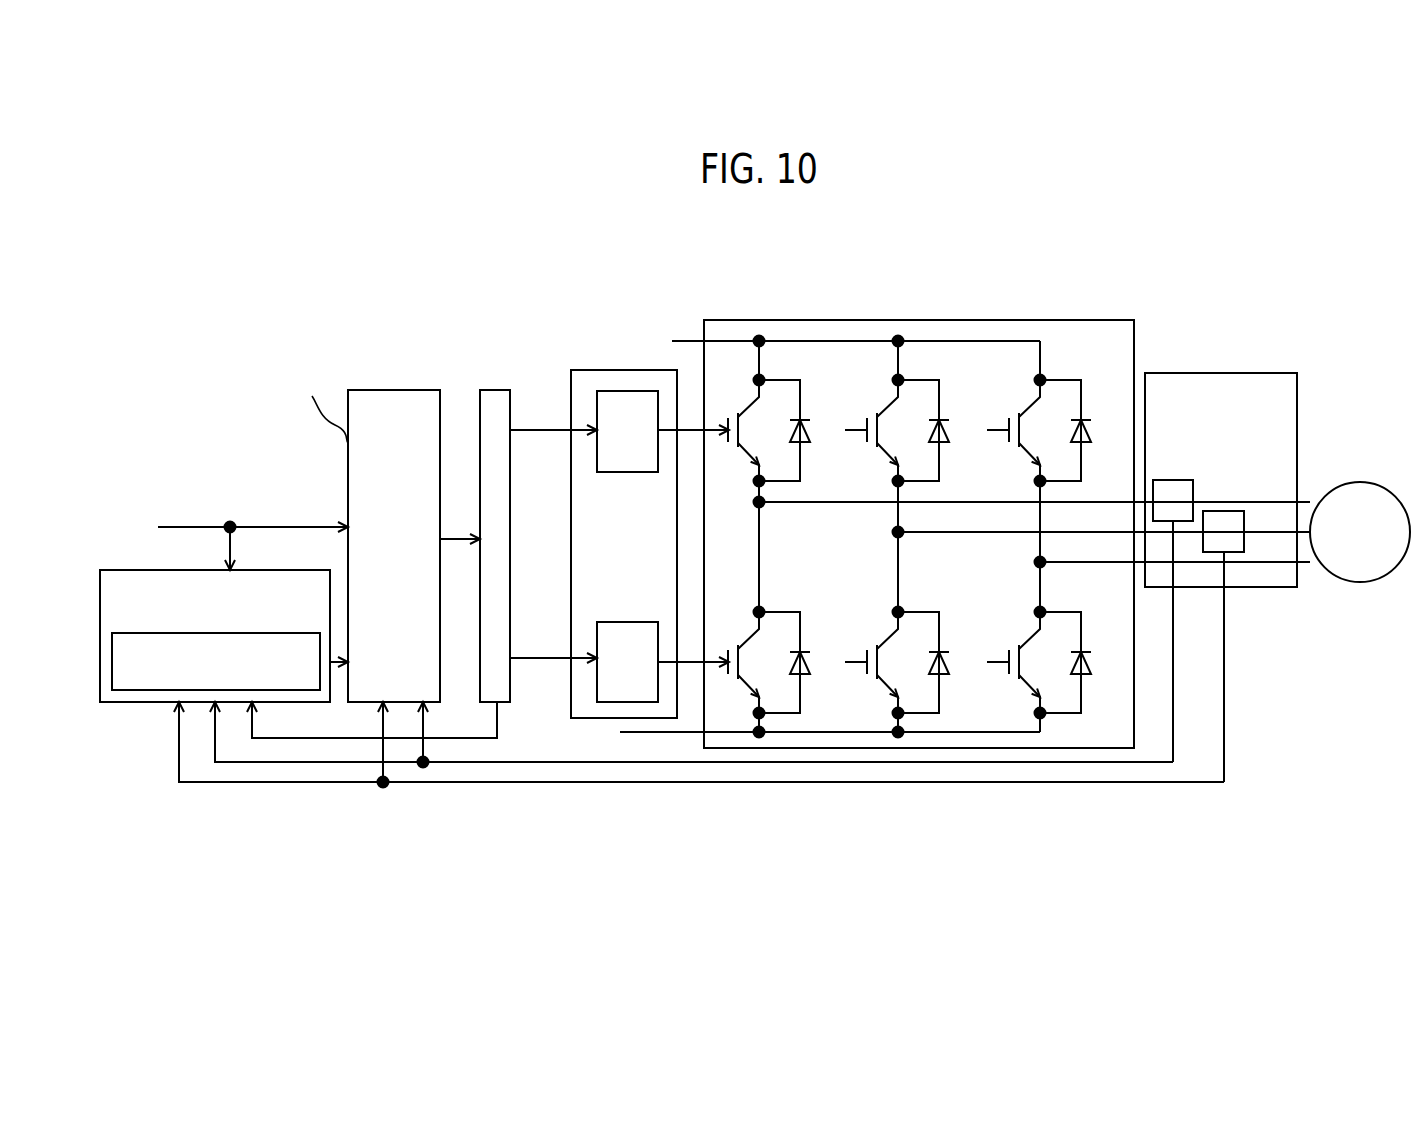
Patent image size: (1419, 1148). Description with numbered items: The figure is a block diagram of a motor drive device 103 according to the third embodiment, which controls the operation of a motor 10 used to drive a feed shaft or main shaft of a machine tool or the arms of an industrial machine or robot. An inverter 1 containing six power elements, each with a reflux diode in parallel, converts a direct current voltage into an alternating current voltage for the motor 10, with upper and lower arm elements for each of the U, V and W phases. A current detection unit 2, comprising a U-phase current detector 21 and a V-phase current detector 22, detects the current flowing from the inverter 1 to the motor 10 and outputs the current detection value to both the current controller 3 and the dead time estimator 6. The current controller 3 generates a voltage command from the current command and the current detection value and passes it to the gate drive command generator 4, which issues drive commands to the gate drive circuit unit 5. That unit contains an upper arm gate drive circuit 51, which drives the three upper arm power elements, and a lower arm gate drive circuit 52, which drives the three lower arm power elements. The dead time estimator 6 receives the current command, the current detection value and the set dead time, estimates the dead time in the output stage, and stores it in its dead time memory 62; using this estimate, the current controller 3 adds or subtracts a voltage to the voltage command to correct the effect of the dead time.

The motor drive device 103 is at (856, 262).
The inverter 1 is at (1047, 320).
The current detection unit 2 is at (1250, 373).
The current controller 3 is at (392, 390).
The gate drive command generator 4 is at (480, 632).
The gate drive circuit unit 5 is at (615, 370).
The dead time estimator 6 is at (122, 570).
The motor 10 is at (1368, 483).
The U-phase current detector 21 is at (1193, 492).
The V-phase current detector 22 is at (1232, 552).
The upper arm gate drive circuit 51 is at (597, 452).
The lower arm gate drive circuit 52 is at (597, 628).
The dead time memory 62 is at (135, 690).